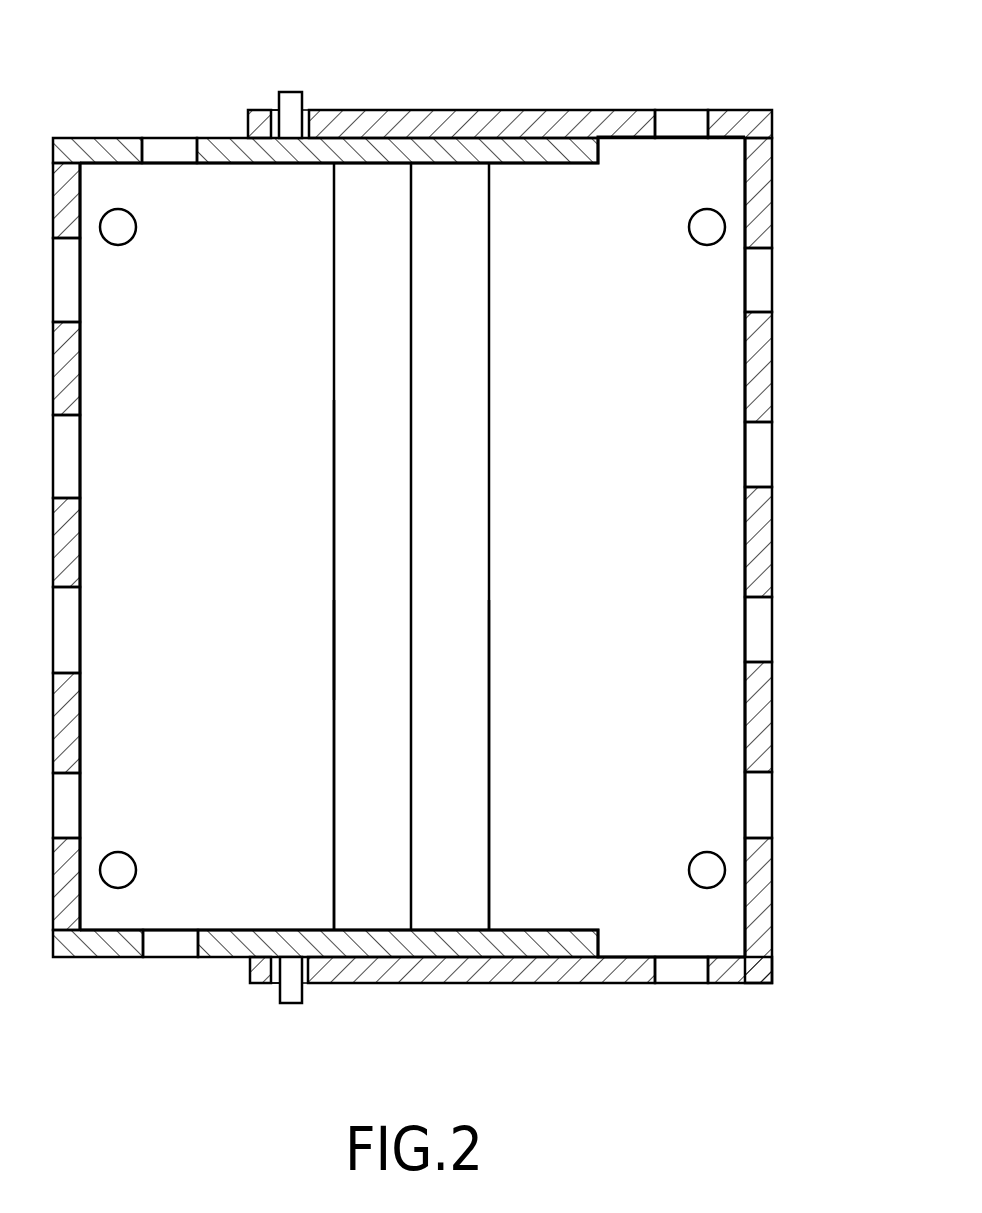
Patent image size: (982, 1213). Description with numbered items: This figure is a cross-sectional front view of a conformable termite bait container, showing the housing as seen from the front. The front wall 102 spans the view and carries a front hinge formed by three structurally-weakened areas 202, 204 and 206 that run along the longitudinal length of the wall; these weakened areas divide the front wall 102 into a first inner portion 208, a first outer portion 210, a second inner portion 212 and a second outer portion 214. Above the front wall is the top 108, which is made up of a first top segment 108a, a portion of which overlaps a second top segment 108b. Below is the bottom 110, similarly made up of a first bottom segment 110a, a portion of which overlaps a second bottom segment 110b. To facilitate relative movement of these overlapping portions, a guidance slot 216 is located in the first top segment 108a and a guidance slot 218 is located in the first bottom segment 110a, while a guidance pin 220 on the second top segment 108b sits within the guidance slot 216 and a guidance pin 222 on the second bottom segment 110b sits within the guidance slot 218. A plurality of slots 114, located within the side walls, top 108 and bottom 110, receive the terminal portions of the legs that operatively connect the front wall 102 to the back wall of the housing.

The front wall 102 is at (156, 398).
The top 108 is at (412, 82).
The first top segment 108a is at (573, 110).
The second top segment 108b is at (227, 138).
The bottom 110 is at (412, 1004).
The first bottom segment 110a is at (605, 985).
The second bottom segment 110b is at (213, 958).
The slots 114 is at (688, 115).
The structurally-weakened area 202 is at (411, 266).
The structurally-weakened area 204 is at (489, 381).
The structurally-weakened area 206 is at (334, 553).
The first inner portion 208 is at (453, 694).
The first outer portion 210 is at (585, 819).
The second inner portion 212 is at (365, 685).
The second outer portion 214 is at (252, 819).
The guidance slot 216 is at (318, 110).
The guidance slot 218 is at (270, 970).
The guidance pin 220 is at (280, 102).
The guidance pin 222 is at (287, 1005).